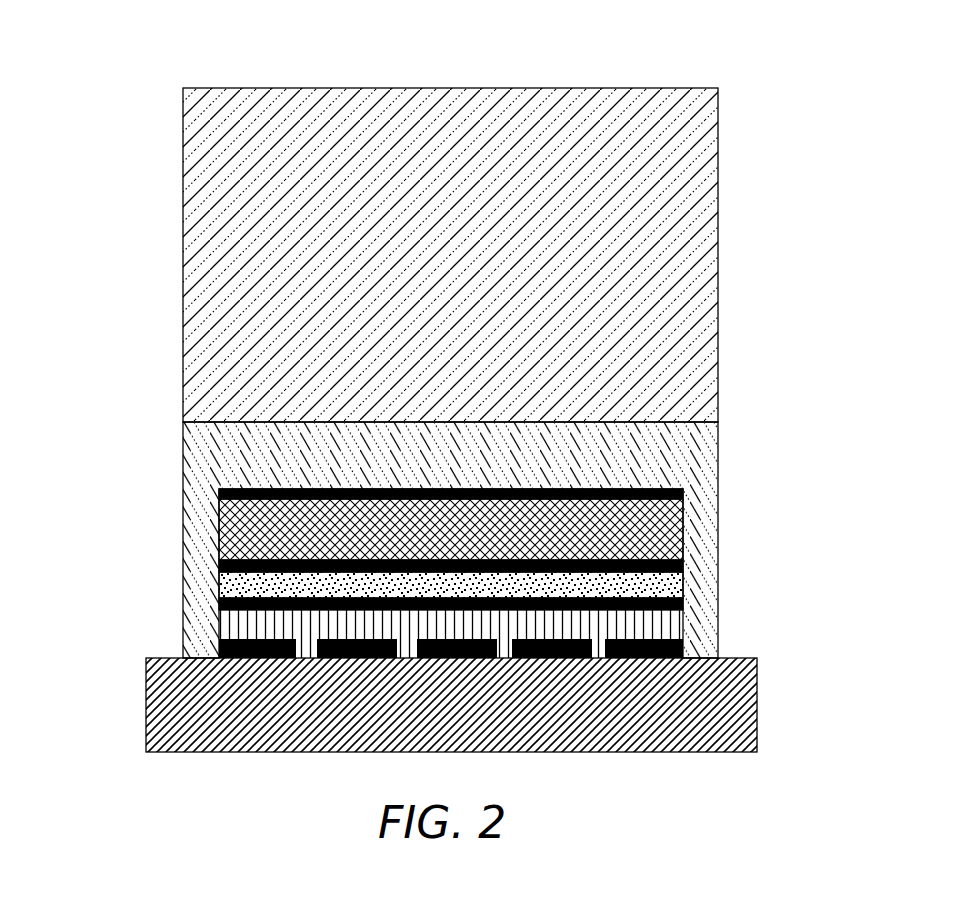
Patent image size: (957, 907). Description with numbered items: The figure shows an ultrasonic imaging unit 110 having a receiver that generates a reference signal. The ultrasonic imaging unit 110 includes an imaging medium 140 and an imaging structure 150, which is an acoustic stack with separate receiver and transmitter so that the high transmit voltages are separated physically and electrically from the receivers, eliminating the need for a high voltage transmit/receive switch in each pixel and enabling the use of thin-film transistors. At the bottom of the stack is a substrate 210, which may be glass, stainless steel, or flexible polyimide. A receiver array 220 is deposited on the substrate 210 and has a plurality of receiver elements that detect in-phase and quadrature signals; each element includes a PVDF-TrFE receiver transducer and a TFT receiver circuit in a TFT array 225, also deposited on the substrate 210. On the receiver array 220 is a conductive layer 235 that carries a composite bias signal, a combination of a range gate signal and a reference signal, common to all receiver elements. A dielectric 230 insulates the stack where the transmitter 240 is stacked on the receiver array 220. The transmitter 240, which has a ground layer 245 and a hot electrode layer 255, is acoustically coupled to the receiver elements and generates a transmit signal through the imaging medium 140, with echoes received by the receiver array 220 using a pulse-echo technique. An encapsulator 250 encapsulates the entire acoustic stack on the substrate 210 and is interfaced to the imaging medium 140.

The ultrasonic imaging unit 110 is at (553, 60).
The imaging medium 140 is at (195, 158).
The imaging structure 150 is at (95, 422).
The substrate 210 is at (168, 690).
The receiver array 220 is at (228, 628).
The TFT array 225 is at (663, 637).
The dielectric 230 is at (222, 585).
The conductive layer 235 is at (683, 597).
The transmitter 240 is at (220, 523).
The ground layer 245 is at (683, 560).
The encapsulator 250 is at (195, 446).
The hot electrode layer 255 is at (678, 490).